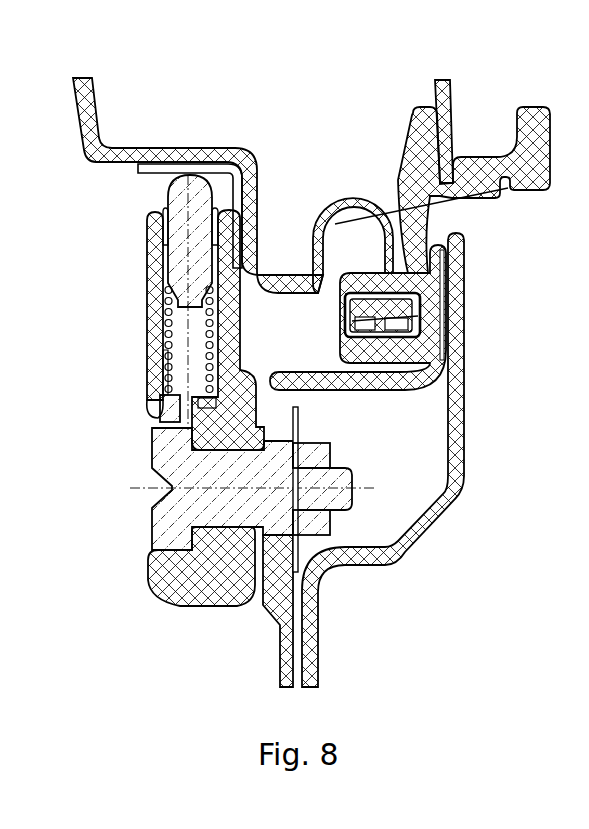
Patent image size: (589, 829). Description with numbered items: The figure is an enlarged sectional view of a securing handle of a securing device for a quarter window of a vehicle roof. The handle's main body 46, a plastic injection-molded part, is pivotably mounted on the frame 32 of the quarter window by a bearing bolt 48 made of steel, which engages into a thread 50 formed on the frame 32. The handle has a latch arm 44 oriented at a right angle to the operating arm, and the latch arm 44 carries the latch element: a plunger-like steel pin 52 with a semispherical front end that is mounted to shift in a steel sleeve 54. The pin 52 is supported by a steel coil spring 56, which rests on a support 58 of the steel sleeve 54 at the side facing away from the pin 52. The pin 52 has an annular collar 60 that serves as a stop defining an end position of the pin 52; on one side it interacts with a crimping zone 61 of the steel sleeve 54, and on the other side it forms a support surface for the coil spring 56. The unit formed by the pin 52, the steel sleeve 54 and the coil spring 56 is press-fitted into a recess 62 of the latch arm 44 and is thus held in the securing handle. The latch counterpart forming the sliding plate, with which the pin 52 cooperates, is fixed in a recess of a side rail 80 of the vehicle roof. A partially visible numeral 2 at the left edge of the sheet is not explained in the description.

The side rail 80 is at (180, 150).
The pin 52 is at (190, 193).
The latch arm 44 is at (225, 293).
The crimping zone 61 is at (160, 237).
The annular collar 60 is at (160, 268).
The steel sleeve 54 is at (160, 298).
The coil spring 56 is at (163, 372).
The recess 62 is at (165, 397).
The support 58 is at (160, 418).
The bearing bolt 48 is at (183, 517).
The main body 46 is at (198, 577).
The thread 50 is at (323, 465).
The frame 32 is at (436, 517).
The actuator assembly 2 is at (4, 155).